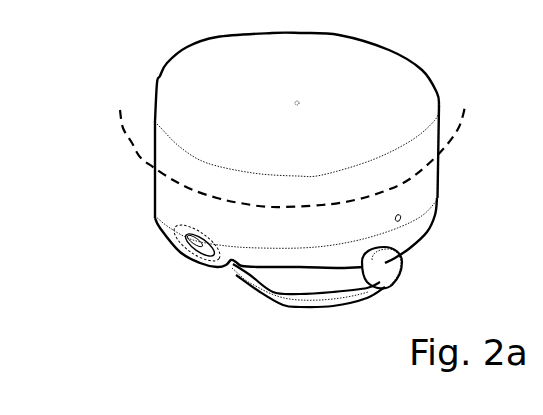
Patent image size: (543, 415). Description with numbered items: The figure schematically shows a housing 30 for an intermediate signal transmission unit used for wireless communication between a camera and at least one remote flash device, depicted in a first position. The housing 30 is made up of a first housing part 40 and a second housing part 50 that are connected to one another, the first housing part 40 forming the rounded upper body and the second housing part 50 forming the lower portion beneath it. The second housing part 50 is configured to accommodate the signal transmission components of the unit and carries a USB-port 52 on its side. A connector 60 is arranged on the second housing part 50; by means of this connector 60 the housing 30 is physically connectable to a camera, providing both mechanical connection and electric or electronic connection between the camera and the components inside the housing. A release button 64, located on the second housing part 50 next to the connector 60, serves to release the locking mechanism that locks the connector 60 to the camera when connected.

The housing 30 is at (281, 195).
The first housing part 40 is at (156, 142).
The second housing part 50 is at (151, 221).
The USB-port 52 is at (192, 248).
The connector 60 is at (266, 291).
The release button 64 is at (390, 276).